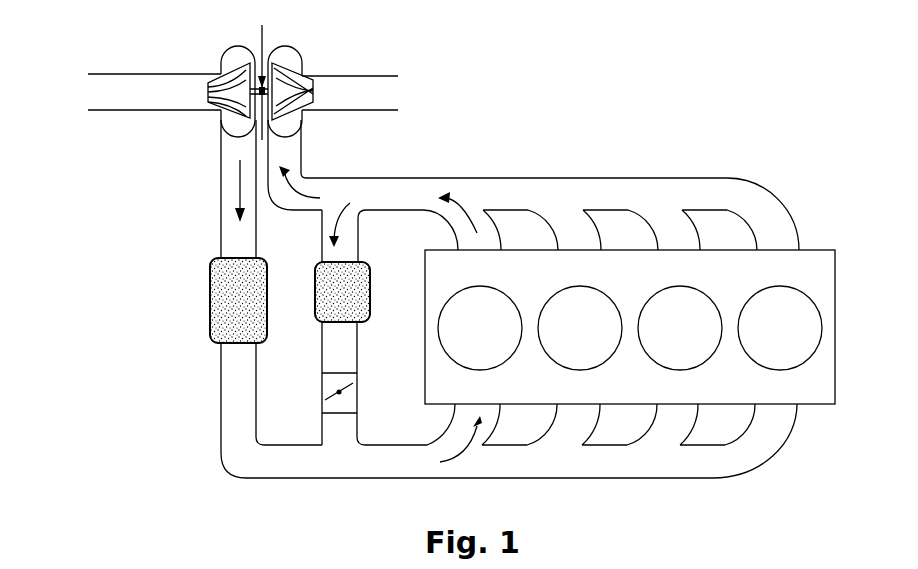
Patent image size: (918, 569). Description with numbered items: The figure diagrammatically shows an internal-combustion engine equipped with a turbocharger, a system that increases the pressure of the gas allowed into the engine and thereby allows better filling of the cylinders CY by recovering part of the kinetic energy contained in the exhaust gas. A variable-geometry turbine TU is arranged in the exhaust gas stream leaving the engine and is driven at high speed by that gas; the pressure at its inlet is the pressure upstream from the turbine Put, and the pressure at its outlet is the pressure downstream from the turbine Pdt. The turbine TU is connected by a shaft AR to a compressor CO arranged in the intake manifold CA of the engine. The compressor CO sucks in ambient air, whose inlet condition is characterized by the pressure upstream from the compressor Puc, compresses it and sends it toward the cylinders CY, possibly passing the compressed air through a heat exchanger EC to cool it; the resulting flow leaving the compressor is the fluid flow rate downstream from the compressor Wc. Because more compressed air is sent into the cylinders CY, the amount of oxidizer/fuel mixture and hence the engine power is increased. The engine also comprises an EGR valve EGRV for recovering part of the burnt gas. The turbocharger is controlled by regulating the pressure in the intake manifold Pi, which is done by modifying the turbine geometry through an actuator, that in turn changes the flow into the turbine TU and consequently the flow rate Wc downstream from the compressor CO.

The compressor CO is at (171, 83).
The turbine TU is at (344, 81).
The shaft AR is at (262, 70).
The pressure upstream from the compressor Puc is at (147, 92).
The pressure downstream from the turbine Pdt is at (353, 92).
The fluid flow rate downstream from the compressor Wc is at (218, 189).
The heat exchanger EC is at (479, 368).
The pressure upstream from the turbine Put is at (533, 185).
The EGR valve EGRV is at (369, 327).
The cylinders CY is at (630, 327).
The intake manifold CA is at (437, 446).
The pressure in the intake manifold Pi is at (545, 464).